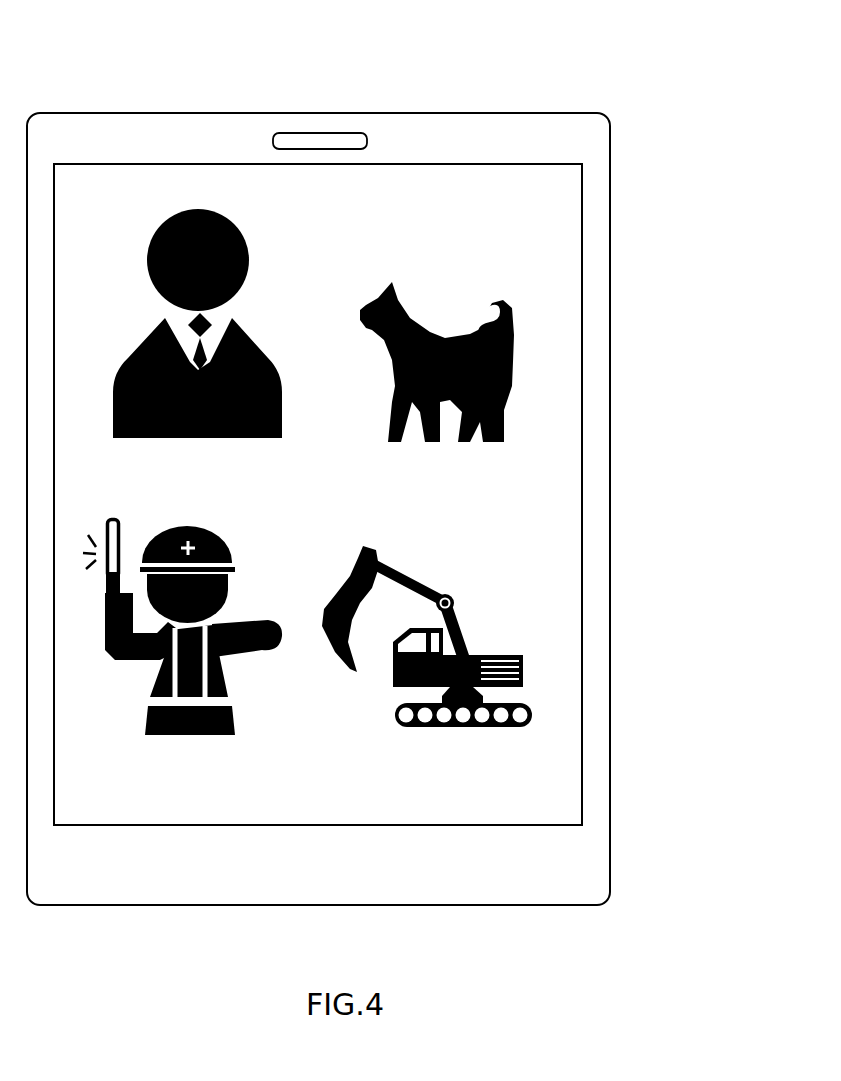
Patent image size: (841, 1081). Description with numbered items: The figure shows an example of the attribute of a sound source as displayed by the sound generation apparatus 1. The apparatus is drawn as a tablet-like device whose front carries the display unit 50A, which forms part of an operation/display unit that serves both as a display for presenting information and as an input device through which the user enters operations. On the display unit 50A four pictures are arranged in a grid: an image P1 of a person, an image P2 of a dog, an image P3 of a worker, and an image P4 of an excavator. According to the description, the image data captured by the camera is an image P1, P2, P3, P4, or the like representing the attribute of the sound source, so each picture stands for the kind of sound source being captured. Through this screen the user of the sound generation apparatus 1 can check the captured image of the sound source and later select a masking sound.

The sound generation apparatus 1 is at (656, 106).
The display unit 50A is at (553, 216).
The image P1 is at (216, 474).
The image P2 is at (466, 482).
The image P3 is at (209, 784).
The image P4 is at (484, 786).